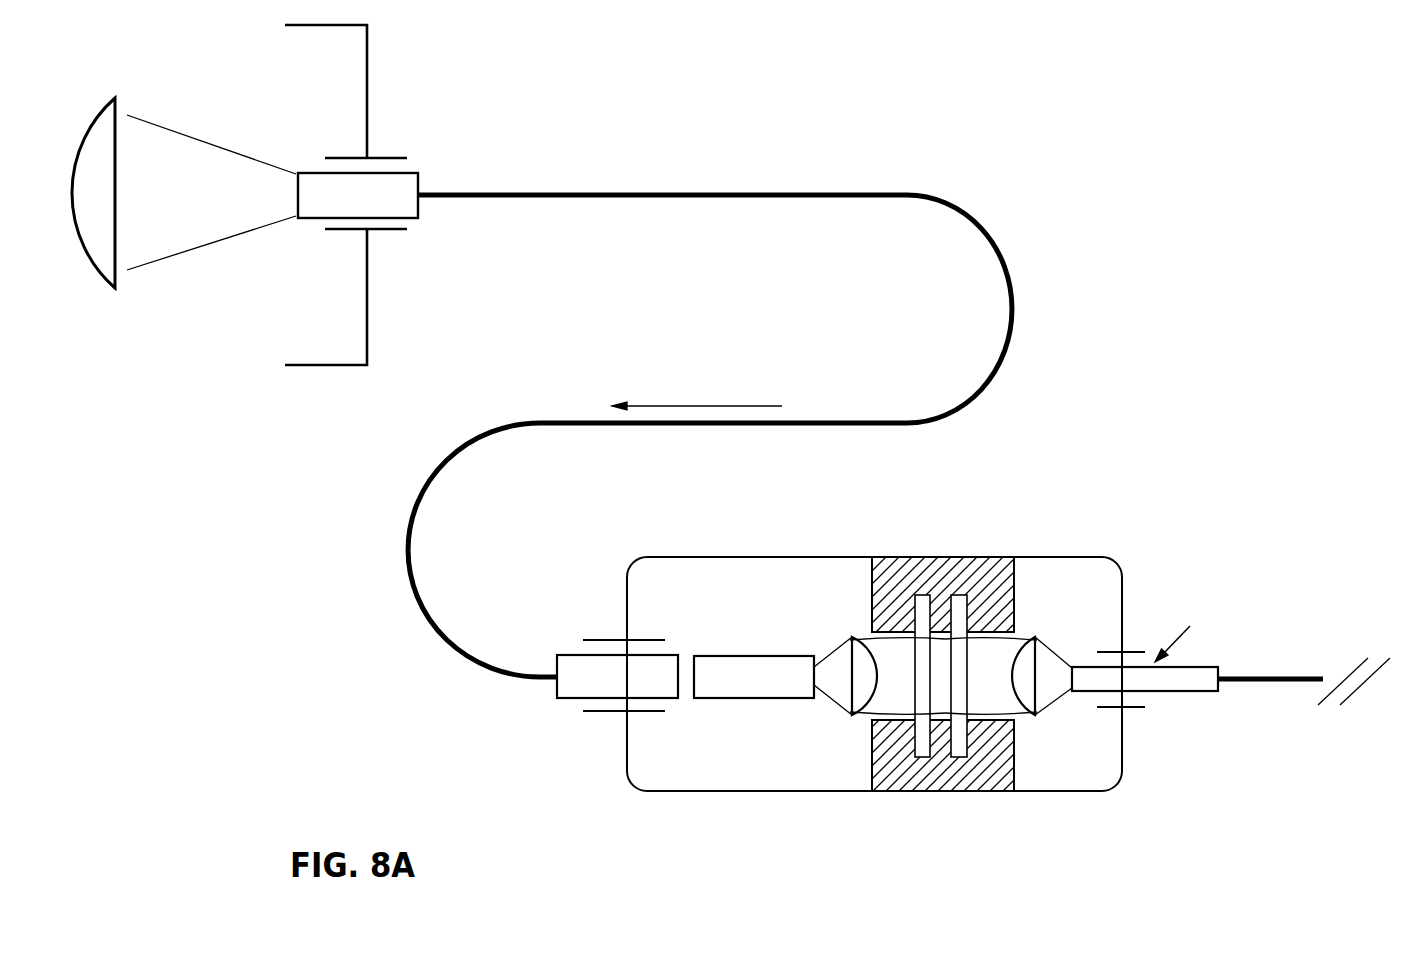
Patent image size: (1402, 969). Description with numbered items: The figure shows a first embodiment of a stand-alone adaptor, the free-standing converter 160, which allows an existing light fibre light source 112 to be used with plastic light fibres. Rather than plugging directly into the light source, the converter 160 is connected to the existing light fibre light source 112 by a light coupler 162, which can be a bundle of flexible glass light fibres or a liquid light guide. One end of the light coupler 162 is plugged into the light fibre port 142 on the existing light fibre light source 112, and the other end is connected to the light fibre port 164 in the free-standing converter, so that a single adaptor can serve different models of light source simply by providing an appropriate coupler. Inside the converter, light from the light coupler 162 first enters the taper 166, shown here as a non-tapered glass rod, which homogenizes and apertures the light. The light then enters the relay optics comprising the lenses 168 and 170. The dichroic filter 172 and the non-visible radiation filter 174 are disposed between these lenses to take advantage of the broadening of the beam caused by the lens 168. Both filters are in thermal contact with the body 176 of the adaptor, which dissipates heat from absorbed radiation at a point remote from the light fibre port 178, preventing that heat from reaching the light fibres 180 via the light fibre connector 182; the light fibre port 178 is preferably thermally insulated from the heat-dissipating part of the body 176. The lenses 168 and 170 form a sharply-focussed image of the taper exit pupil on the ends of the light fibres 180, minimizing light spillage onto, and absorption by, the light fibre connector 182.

The existing light fibre light source 112 is at (222, 309).
The light fibre port 142 is at (383, 231).
The free-standing converter 160 is at (938, 805).
The light coupler 162 is at (598, 713).
The light fibre port 164 is at (607, 198).
The taper 166 is at (752, 700).
The lens 168 is at (850, 717).
The lens 170 is at (1033, 717).
The dichroic filter 172 is at (873, 637).
The non-visible radiation filter 174 is at (1017, 635).
The body 176 is at (1050, 795).
The light fibre port 178 is at (1128, 708).
The light fibres 180 is at (1270, 682).
The light fibre connector 182 is at (1208, 667).